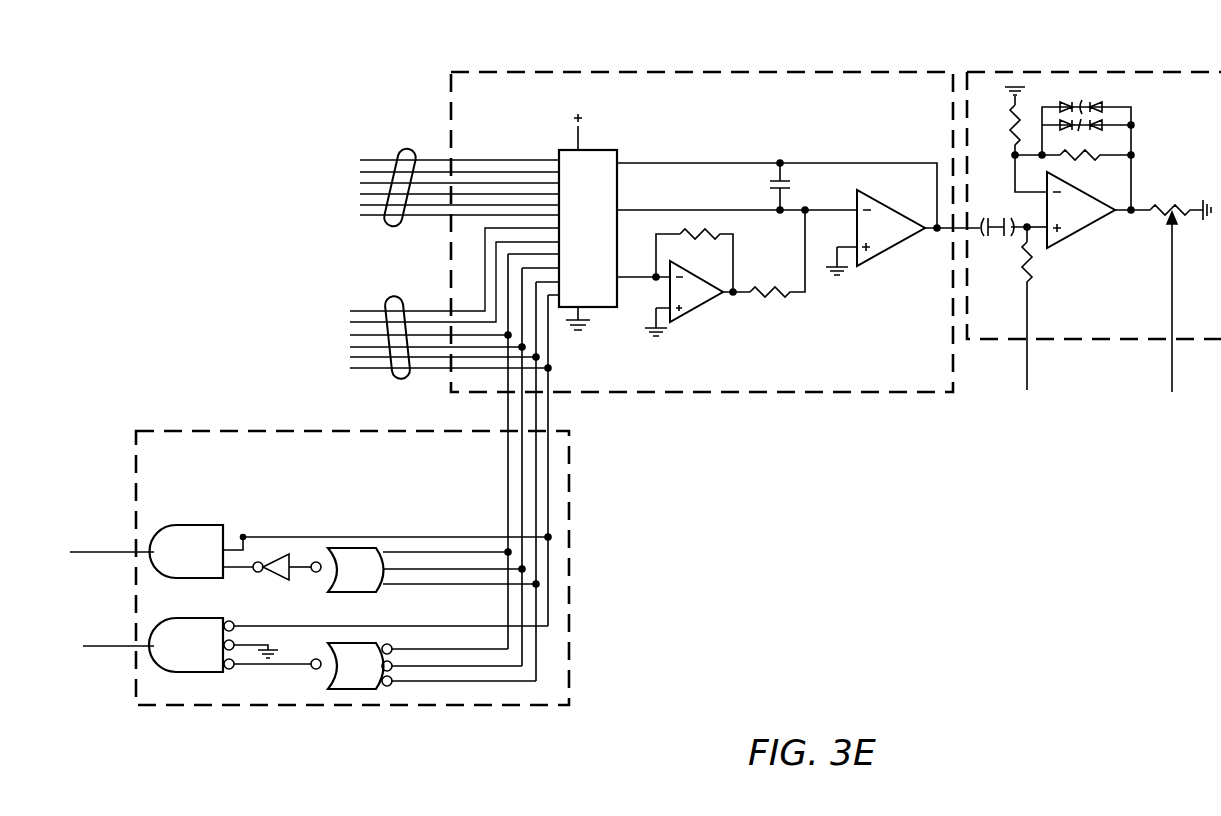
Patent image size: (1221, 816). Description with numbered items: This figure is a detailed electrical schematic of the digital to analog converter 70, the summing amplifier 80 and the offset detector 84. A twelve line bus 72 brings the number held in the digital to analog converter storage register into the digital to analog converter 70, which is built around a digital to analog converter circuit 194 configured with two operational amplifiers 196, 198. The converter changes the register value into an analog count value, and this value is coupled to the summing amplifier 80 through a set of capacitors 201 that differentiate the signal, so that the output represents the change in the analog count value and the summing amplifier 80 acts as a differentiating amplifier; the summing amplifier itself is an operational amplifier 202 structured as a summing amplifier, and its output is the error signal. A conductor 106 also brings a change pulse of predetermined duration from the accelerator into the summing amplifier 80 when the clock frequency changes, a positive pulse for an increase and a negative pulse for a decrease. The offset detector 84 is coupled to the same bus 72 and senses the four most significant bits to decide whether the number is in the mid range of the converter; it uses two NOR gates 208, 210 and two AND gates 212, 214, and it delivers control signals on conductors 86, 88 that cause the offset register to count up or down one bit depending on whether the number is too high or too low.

The digital to analog converter 70 is at (800, 372).
The 12 line bus 72 is at (392, 236).
The summing amplifier 80 is at (1122, 322).
The offset detector 84 is at (340, 506).
The conductor 86 is at (112, 550).
The conductor 88 is at (119, 641).
The conductor 106 is at (1030, 360).
The digital to analog converter circuit 194 is at (562, 222).
The operational amplifier 196 is at (725, 273).
The operational amplifier 198 is at (903, 232).
The capacitors 201 is at (1004, 239).
The operational amplifier 202 is at (1108, 239).
The NOR gate 208 is at (348, 645).
The NOR gate 210 is at (351, 552).
The AND gate 212 is at (425, 570).
The AND gate 214 is at (423, 666).